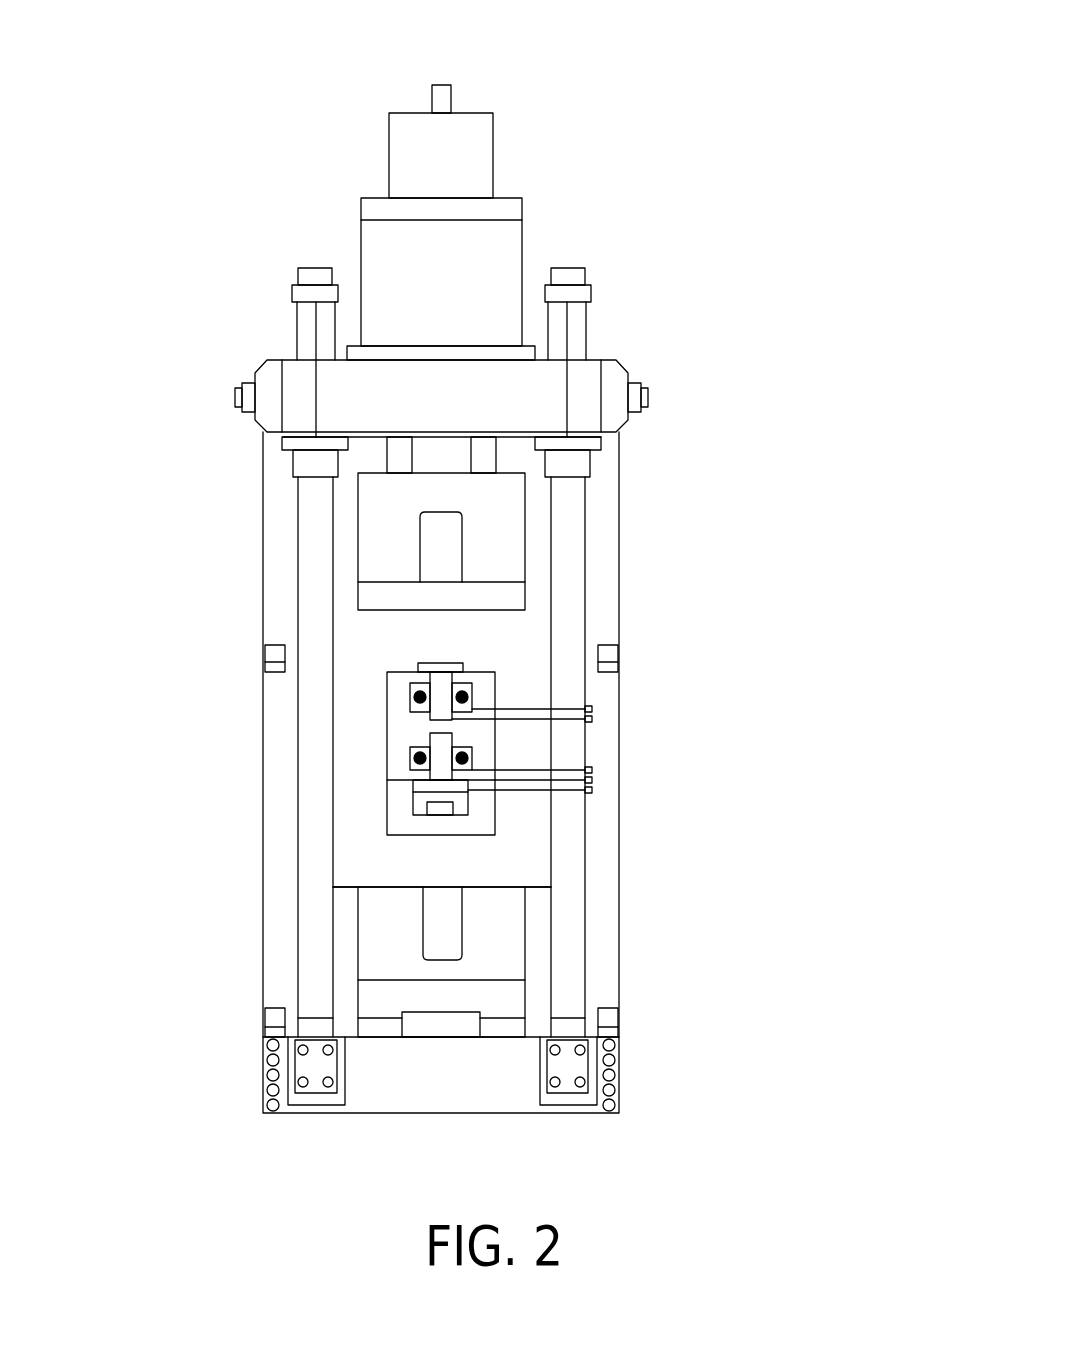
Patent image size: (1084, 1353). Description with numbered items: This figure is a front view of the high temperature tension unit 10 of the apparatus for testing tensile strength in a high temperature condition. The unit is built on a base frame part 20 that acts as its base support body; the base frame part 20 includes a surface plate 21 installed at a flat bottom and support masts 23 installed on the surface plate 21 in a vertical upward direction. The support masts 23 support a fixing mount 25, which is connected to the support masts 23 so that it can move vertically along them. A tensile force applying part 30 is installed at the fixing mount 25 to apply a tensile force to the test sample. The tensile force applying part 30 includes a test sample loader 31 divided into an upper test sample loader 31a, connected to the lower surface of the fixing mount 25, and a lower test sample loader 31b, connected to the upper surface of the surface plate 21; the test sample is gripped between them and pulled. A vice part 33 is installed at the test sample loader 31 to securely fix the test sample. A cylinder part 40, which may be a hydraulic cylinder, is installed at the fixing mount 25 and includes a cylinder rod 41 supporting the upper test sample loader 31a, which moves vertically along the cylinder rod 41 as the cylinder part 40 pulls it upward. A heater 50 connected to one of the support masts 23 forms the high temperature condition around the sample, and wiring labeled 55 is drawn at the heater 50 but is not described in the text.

The high temperature tension unit 10 is at (595, 130).
The base frame part 20 is at (249, 192).
The surface plate 21 is at (272, 1050).
The support mast 23 is at (560, 278).
The fixing mount 25 is at (300, 377).
The tensile force applying part 30 is at (822, 567).
The test sample loader 31 is at (762, 660).
The upper test sample loader 31a is at (515, 553).
The lower test sample loader 31b is at (510, 907).
The vice part 33 is at (452, 523).
The cylinder part 40 is at (460, 452).
The cylinder rod 41 is at (505, 318).
The heater 50 is at (400, 737).
The sensor wire 55 is at (594, 775).